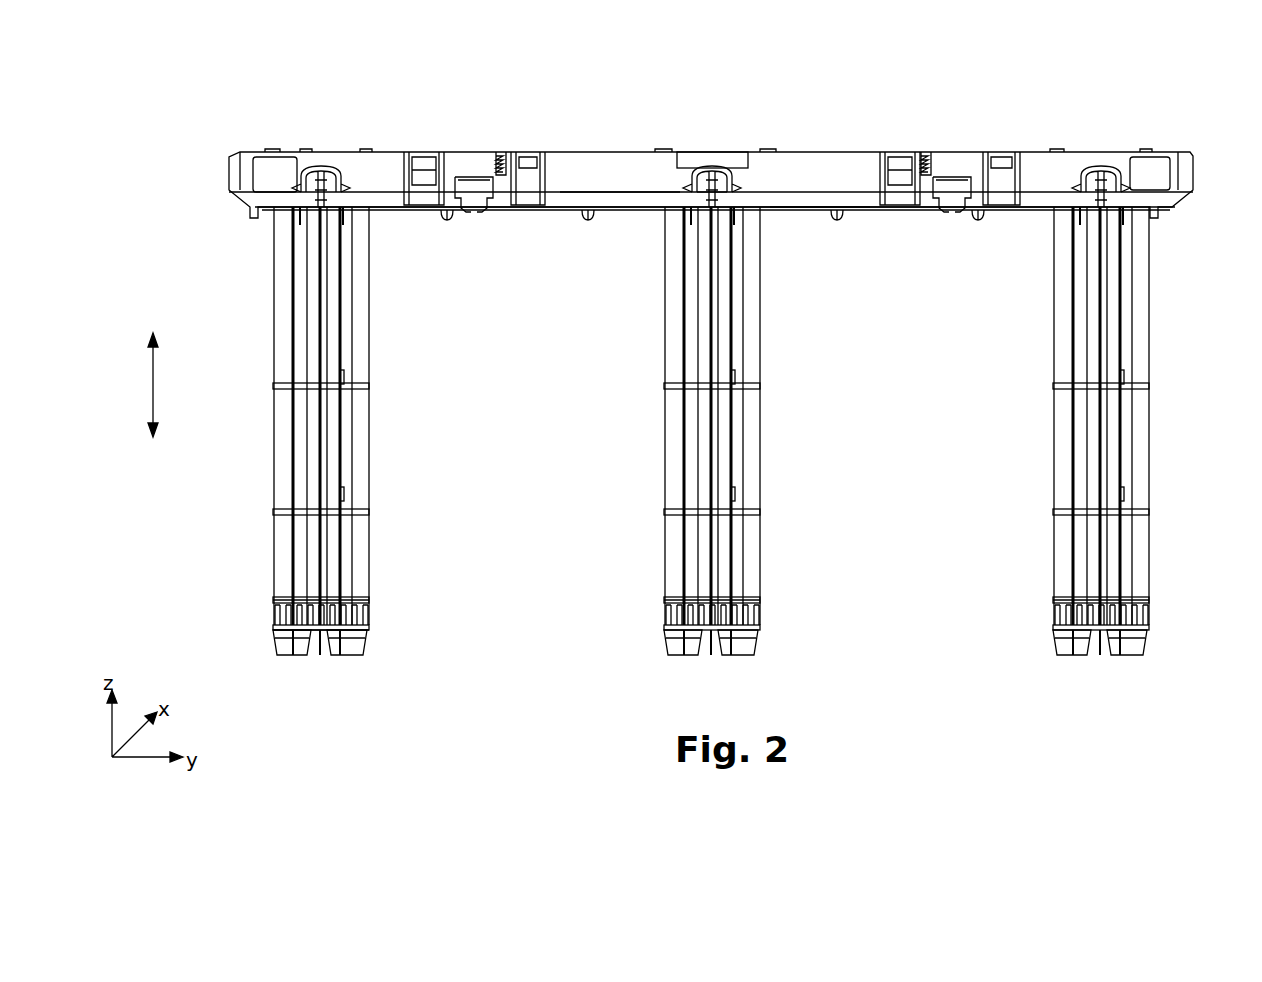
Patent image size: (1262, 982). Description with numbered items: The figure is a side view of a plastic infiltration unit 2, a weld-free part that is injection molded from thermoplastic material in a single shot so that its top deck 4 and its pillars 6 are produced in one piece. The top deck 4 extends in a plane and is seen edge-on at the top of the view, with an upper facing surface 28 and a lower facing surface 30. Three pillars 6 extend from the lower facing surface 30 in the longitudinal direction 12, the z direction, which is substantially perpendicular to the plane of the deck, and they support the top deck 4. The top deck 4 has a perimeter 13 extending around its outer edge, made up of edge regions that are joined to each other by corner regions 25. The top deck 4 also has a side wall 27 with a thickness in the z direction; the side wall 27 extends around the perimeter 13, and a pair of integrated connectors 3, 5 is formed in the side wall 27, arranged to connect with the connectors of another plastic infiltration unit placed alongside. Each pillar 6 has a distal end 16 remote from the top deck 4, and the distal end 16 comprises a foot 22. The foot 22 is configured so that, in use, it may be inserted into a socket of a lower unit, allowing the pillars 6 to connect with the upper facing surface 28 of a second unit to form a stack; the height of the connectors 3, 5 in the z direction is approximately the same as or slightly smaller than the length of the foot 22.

The plastic infiltration unit 2 is at (795, 128).
The connector 3 is at (522, 160).
The top deck 4 is at (1185, 180).
The connector 5 is at (424, 160).
The pillar 6 is at (274, 455).
The longitudinal direction 12 is at (153, 378).
The perimeter 13 is at (1108, 152).
The distal end 16 is at (268, 603).
The foot 22 is at (378, 628).
The corner region 25 is at (232, 184).
The side wall 27 is at (602, 184).
The upper facing surface 28 is at (618, 152).
The lower facing surface 30 is at (806, 210).